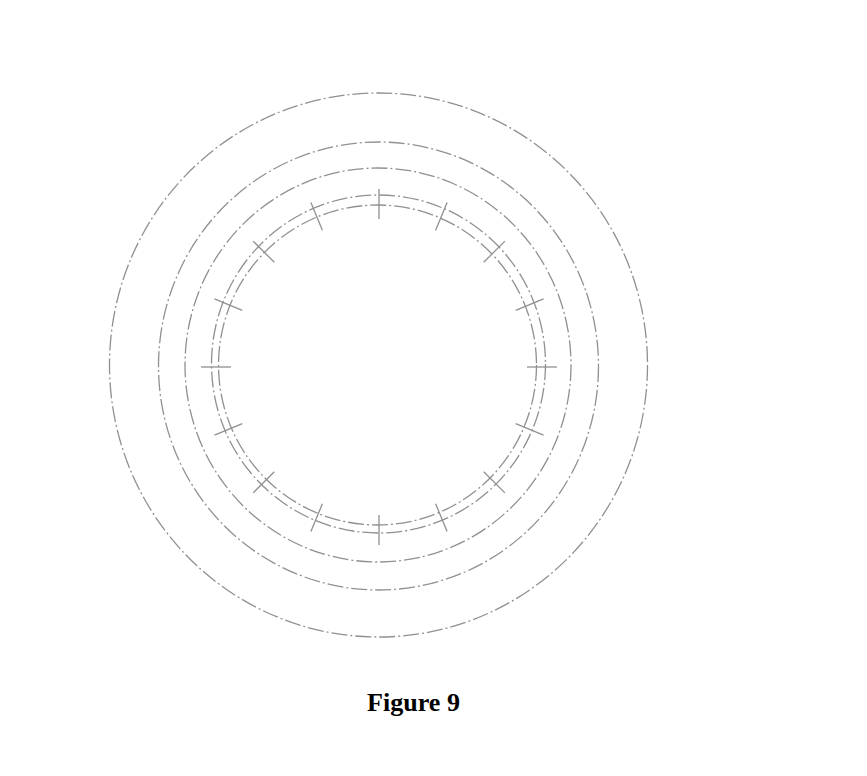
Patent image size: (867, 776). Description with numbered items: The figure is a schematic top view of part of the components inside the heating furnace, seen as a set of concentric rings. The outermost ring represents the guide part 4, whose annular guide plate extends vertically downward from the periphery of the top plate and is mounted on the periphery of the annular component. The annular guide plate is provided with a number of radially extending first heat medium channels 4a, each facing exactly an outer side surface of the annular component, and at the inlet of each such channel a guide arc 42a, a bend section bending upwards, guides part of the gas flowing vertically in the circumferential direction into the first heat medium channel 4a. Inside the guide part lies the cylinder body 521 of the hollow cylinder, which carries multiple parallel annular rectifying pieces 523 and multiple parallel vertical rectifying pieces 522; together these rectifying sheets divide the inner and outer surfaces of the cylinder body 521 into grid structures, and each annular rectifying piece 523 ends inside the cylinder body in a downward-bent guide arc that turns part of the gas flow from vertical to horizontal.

The guide part 4 is at (575, 257).
The first heat medium channel 4a is at (188, 336).
The guide arc 42a is at (625, 472).
The cylinder body 521 is at (503, 472).
The vertical rectifying piece 522 is at (282, 265).
The annular rectifying piece 523 is at (545, 332).